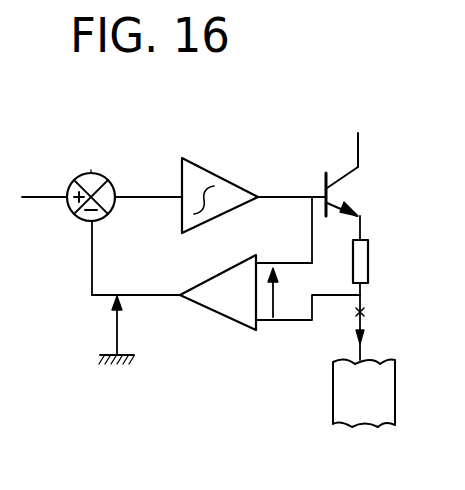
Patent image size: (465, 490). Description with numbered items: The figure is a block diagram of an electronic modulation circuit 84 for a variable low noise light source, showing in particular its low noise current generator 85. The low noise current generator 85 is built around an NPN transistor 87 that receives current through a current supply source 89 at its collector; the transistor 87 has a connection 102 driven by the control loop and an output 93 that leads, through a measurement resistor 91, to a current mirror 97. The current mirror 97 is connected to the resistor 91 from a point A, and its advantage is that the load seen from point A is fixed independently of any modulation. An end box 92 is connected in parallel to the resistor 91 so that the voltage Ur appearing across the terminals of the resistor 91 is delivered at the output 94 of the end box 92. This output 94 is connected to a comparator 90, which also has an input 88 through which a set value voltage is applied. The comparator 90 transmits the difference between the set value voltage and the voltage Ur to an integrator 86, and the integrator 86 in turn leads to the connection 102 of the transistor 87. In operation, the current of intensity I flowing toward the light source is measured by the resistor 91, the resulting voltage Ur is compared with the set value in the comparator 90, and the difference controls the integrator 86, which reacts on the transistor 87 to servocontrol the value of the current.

The electronic modulation circuit 84 is at (409, 214).
The low noise current generator 85 is at (259, 152).
The integrator 86 is at (218, 173).
The NPN transistor 87 is at (333, 166).
The input 88 is at (40, 196).
The current supply source 89 is at (358, 133).
The comparator 90 is at (89, 172).
The measurement resistor 91 is at (370, 260).
The end box 92 is at (226, 315).
The output 93 is at (348, 208).
The output 94 is at (146, 295).
The current mirror 97 is at (333, 396).
The connection 102 is at (348, 212).